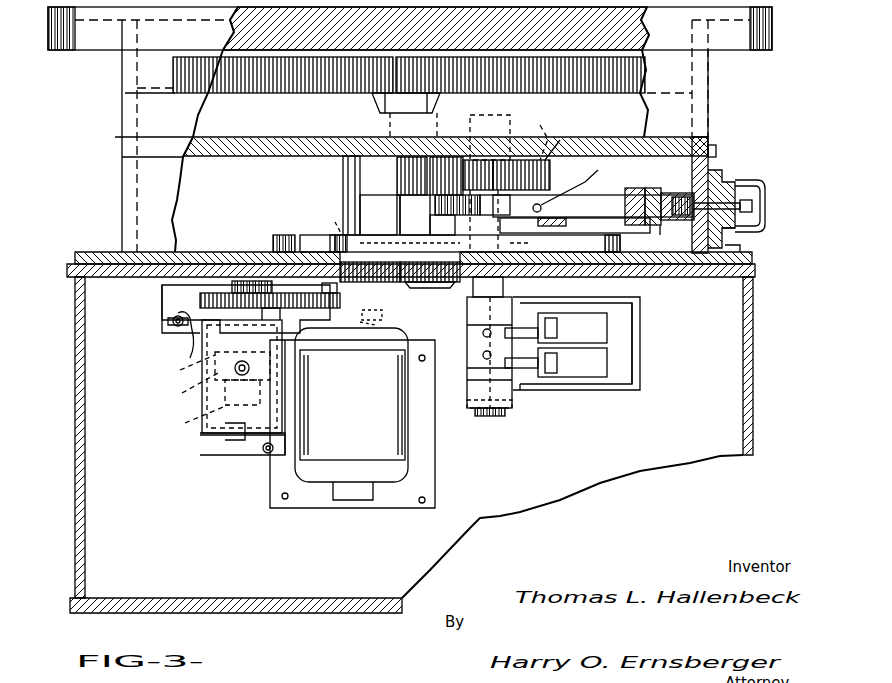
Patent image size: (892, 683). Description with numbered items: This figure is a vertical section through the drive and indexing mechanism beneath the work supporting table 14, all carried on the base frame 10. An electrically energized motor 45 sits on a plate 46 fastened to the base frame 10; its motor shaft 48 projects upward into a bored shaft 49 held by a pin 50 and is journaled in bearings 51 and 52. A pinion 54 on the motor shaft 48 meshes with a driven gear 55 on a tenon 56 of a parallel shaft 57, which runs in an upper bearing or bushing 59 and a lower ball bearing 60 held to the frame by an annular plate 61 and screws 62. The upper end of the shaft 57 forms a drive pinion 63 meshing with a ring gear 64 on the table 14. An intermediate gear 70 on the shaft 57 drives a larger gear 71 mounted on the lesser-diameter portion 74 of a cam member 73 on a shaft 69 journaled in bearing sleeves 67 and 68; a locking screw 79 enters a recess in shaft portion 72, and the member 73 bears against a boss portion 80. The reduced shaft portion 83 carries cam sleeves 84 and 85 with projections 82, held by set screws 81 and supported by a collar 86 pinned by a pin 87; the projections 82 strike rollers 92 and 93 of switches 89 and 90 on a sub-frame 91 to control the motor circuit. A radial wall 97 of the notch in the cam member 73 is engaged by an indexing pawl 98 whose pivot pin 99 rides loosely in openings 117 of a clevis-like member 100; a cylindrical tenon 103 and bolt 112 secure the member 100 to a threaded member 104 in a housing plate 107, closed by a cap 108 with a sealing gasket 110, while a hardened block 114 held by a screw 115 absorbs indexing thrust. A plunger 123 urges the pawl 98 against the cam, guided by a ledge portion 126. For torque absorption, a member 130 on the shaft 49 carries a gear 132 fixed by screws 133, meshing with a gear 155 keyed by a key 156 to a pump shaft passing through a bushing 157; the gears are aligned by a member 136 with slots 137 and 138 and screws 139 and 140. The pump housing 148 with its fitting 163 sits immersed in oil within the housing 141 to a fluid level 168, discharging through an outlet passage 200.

The base frame 10 is at (753, 290).
The work supporting table 14 is at (772, 40).
The electrically energized motor 45 is at (408, 452).
The plate 46 is at (435, 493).
The motor shaft 48 is at (360, 305).
The shaft 49 is at (343, 178).
The pin 50 is at (300, 240).
The bearing 51 is at (335, 137).
The bearing 52 is at (327, 222).
The pinion 54 is at (340, 240).
The driven gear 55 is at (455, 282).
The tenon 56 is at (418, 288).
The shaft 57 is at (400, 202).
The bearing or bushing 59 is at (375, 103).
The ball bearing 60 is at (381, 215).
The annular plate 61 is at (415, 215).
The screws 62 is at (475, 244).
The drive pinion 63 is at (428, 57).
The ring gear 64 is at (372, 57).
The bearing sleeve 67 is at (510, 127).
The bearing sleeve 68 is at (565, 244).
The shaft 69 is at (490, 118).
The gear 70 is at (397, 171).
The gear 71 is at (550, 173).
The portion of shaft 72 is at (450, 157).
The member 73 is at (435, 205).
The portion of lesser diameter 74 is at (560, 142).
The locking screw 79 is at (470, 218).
The boss portion 80 is at (530, 229).
The set screws 81 is at (483, 355).
The cams or projections 82 is at (520, 328).
The reduced diameter shaft portion 83 is at (467, 368).
The cam sleeve 84 is at (467, 326).
The cam sleeve 85 is at (470, 378).
The collar 86 is at (500, 416).
The pin 87 is at (512, 410).
The circuit controlling switch 89 is at (592, 306).
The circuit controlling switch 90 is at (596, 383).
The sub-frame 91 is at (636, 390).
The roller or member 92 is at (557, 329).
The roller or member 93 is at (557, 362).
The radially disposed wall 97 is at (486, 221).
The indexing pawl 98 is at (590, 200).
The pivot pin 99 is at (652, 188).
The clevis-like member 100 is at (665, 193).
The cylindrical tenon 103 is at (712, 160).
The member 104 is at (730, 180).
The housing plate 107 is at (698, 140).
The cap or closure 108 is at (760, 182).
The sealing gasket 110 is at (735, 232).
The bolt 112 is at (752, 205).
The block or abutment 114 is at (690, 278).
The screw 115 is at (668, 225).
The openings 117 is at (632, 225).
The plunger 123 is at (583, 180).
The ledge portion 126 is at (566, 226).
The member 130 is at (322, 288).
The gear 132 is at (388, 313).
The securing screws 133 is at (383, 327).
The member 136 is at (185, 330).
The elongated slots 137 is at (168, 321).
The elongated slot 138 is at (270, 455).
The screws 139 is at (178, 313).
The screw 140 is at (262, 450).
The housing 141 is at (200, 437).
The pump housing 148 is at (180, 388).
The gear 155 is at (212, 293).
The key 156 is at (263, 252).
The bushing 157 is at (205, 302).
The fitting 163 is at (186, 419).
The fluid level 168 is at (176, 367).
The outlet passage 200 is at (242, 376).